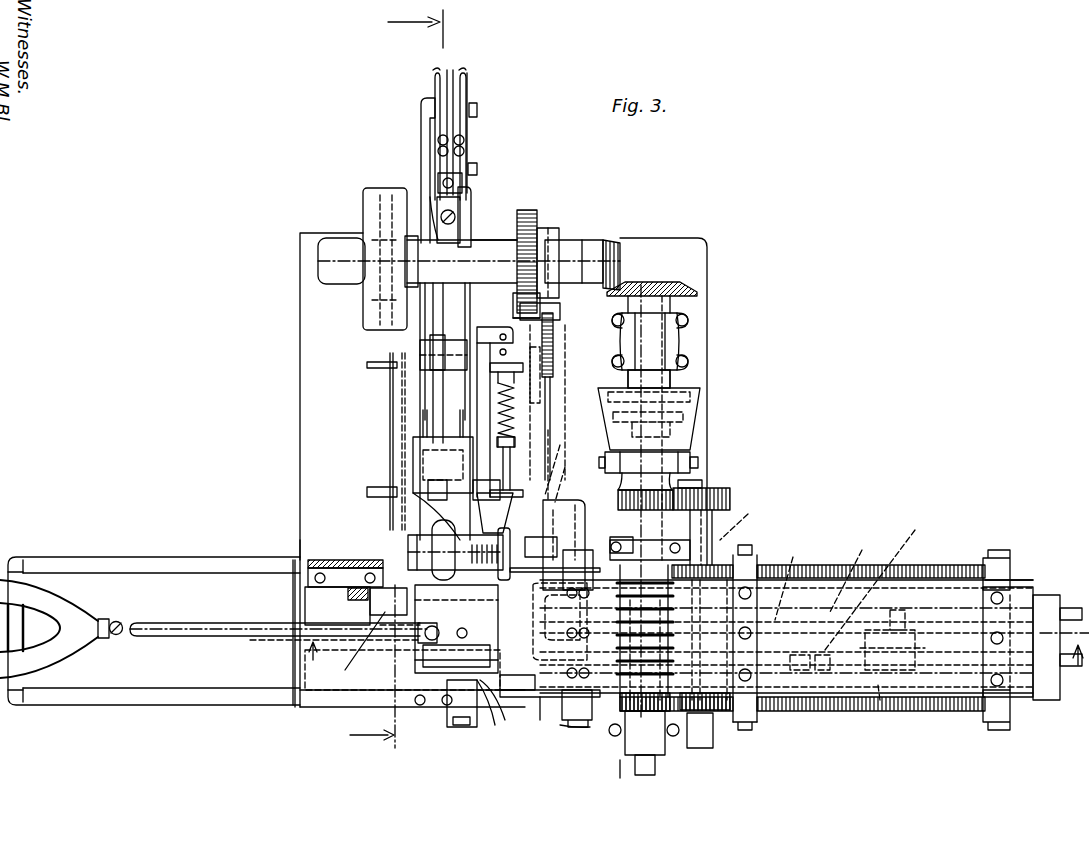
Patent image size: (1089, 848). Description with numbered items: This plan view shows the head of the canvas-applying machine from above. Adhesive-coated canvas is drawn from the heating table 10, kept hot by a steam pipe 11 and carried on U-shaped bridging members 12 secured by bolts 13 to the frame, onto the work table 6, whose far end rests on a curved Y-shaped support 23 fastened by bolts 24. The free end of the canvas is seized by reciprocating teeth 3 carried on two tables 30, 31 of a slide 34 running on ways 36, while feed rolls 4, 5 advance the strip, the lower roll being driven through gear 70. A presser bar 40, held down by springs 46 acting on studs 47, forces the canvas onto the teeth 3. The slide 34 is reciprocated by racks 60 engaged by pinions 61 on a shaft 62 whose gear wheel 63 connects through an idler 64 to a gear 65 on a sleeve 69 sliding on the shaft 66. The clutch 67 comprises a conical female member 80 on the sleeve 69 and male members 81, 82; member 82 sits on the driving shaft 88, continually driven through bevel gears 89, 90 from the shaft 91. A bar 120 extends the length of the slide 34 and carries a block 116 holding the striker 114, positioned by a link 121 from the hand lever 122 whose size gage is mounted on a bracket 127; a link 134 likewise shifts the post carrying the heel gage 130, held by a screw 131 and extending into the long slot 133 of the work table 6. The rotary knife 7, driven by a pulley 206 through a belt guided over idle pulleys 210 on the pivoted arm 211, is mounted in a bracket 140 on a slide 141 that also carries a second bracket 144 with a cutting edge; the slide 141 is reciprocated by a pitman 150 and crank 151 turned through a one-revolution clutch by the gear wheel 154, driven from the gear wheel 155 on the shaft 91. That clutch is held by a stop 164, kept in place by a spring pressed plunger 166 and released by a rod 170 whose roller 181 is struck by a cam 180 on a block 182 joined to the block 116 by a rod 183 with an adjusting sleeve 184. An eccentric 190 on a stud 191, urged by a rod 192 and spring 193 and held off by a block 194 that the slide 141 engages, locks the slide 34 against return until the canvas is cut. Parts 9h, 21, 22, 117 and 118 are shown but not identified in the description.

The reciprocating teeth 3 is at (490, 652).
The upper feed roll 4 is at (698, 704).
The lower feed roll 5 is at (399, 384).
The work table 6 is at (252, 622).
The rotary knife 7 is at (490, 510).
The bearing block 9h is at (365, 205).
The heating table 10 is at (880, 600).
The steam pipe 11 is at (1035, 600).
The U-shaped bridging members 12 is at (600, 725).
The bolts 13 is at (560, 545).
The latch 21 is at (490, 720).
The bracket 22 is at (455, 727).
The curved Y-shaped support 23 is at (65, 605).
The bolts 24 is at (0, 590).
The table 30 is at (420, 655).
The table 31 is at (420, 600).
The slide 34 is at (332, 700).
The ways 36 is at (182, 557).
The presser bar 40 is at (500, 680).
The springs 46 is at (615, 545).
The studs 47 is at (530, 700).
The racks 60 is at (830, 567).
The pinions 61 is at (750, 560).
The shaft 62 is at (748, 518).
The gear wheel 63 is at (715, 490).
The idler 64 is at (698, 462).
The gear 65 is at (618, 502).
The shaft 66 is at (690, 455).
The clutch 67 is at (700, 400).
The sleeve 69 is at (620, 486).
The gear 70 is at (635, 715).
The conical female clutch member 80 is at (705, 412).
The conical male clutch member 81 is at (540, 416).
The conical male clutch member 82 is at (688, 395).
The driving shaft 88 is at (675, 340).
The bevel gear 89 is at (655, 284).
The bevel gear 90 is at (618, 248).
The shaft 91 is at (478, 248).
The striker 114 is at (875, 715).
The block 116 is at (945, 570).
The stop 117 is at (915, 715).
The block 118 is at (915, 665).
The bar 120 is at (884, 580).
The link 121 is at (860, 570).
The hand lever 122 is at (350, 594).
The bracket 127 is at (300, 540).
The heel gage 130 is at (420, 611).
The screw 131 is at (430, 655).
The long slot 133 is at (178, 622).
The link 134 is at (350, 647).
The bracket 140 is at (428, 530).
The slide 141 is at (420, 395).
The second bracket 144 is at (412, 507).
The pitman 150 is at (440, 324).
The crank 151 is at (430, 210).
The gear wheel 154 is at (542, 232).
The gear wheel 155 is at (530, 218).
The stop 164 is at (545, 300).
The spring pressed plunger 166 is at (550, 316).
The rod 170 is at (548, 395).
The cam 180 is at (760, 522).
The roller 181 is at (545, 720).
The block 182 is at (794, 578).
The rod 183 is at (880, 712).
The adjusting sleeve 184 is at (795, 715).
The eccentric 190 is at (566, 459).
The stud 191 is at (575, 474).
The rod 192 is at (506, 450).
The spring 193 is at (510, 410).
The block 194 is at (495, 328).
The pulley 206 is at (405, 549).
The idle pulleys 210 is at (460, 150).
The arm 211 is at (422, 125).